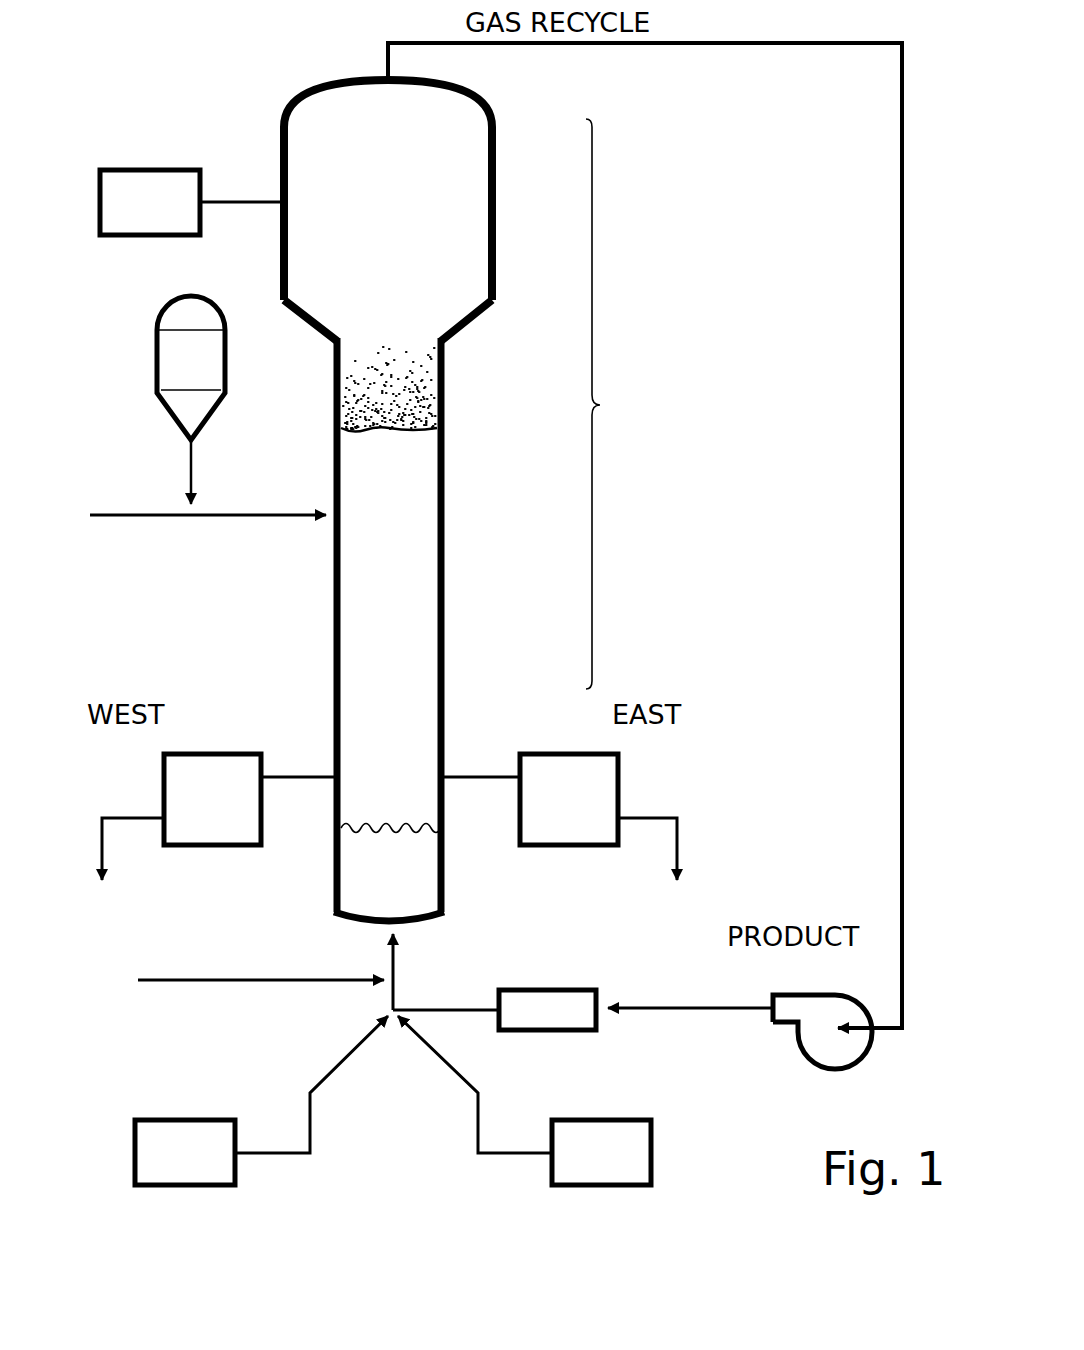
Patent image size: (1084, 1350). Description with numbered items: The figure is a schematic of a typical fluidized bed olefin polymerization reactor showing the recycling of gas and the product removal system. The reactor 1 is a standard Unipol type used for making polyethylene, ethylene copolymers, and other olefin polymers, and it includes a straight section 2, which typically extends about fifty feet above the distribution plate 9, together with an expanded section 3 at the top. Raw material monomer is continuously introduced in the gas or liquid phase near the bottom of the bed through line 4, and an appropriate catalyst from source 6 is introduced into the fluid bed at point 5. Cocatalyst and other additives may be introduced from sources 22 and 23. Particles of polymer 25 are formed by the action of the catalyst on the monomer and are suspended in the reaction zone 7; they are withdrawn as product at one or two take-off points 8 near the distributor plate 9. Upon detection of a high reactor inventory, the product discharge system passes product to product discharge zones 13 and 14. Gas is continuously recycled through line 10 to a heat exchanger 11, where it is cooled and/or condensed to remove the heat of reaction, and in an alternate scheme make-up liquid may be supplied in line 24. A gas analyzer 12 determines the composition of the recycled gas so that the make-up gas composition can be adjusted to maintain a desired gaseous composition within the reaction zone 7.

The reactor 1 is at (602, 405).
The straight section 2 is at (445, 500).
The expanded section 3 is at (497, 178).
The line 4 is at (200, 980).
The point 5 is at (333, 522).
The source 6 is at (190, 382).
The reaction zone 7 is at (395, 560).
The take-off points 8 is at (312, 776).
The distribution plate 9 is at (376, 832).
The line 10 is at (900, 333).
The heat exchanger 11 is at (550, 1032).
The gas analyzer 12 is at (192, 202).
The product discharge zone 13 is at (181, 817).
The product discharge zone 14 is at (598, 817).
The source 22 is at (261, 1100).
The source 23 is at (524, 1100).
The line 24 is at (675, 1010).
The particles of polymer 25 is at (398, 389).